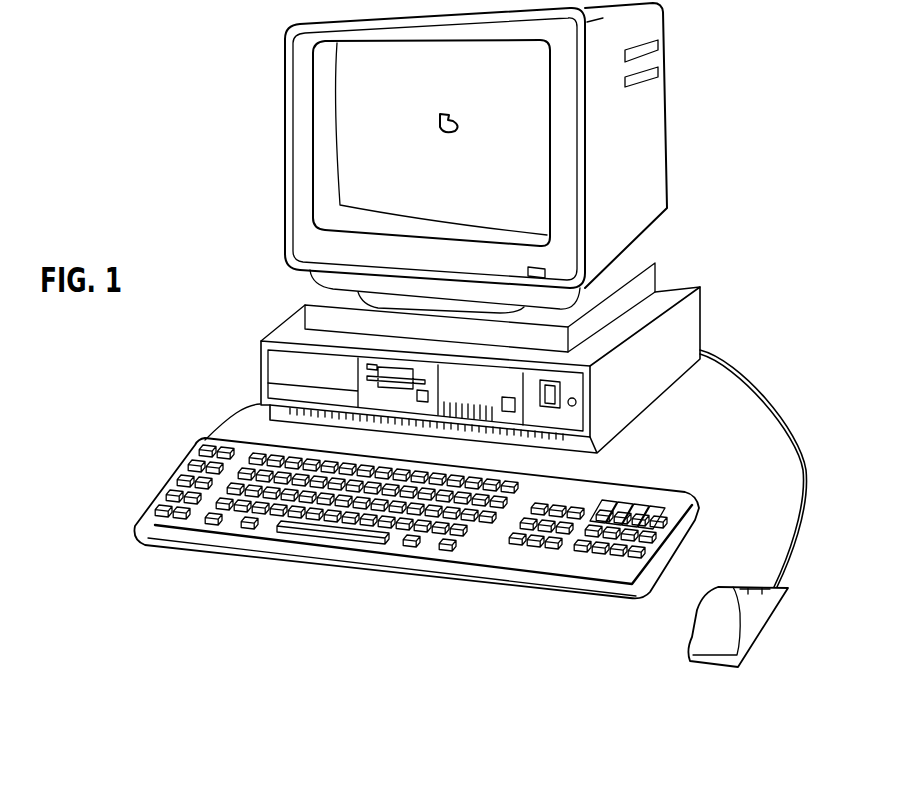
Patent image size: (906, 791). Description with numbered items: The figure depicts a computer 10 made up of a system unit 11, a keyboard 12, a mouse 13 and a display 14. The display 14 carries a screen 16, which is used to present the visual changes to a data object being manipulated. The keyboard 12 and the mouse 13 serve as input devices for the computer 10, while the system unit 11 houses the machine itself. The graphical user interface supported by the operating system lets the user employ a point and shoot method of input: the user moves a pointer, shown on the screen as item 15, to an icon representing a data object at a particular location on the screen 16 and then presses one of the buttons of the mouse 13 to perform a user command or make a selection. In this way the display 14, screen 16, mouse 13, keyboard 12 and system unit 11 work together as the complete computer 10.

The computer 10 is at (232, 218).
The system unit 11 is at (262, 348).
The keyboard 12 is at (160, 543).
The mouse 13 is at (775, 620).
The display 14 is at (283, 132).
The cursor / pointer 15 is at (442, 114).
The screen 16 is at (404, 166).